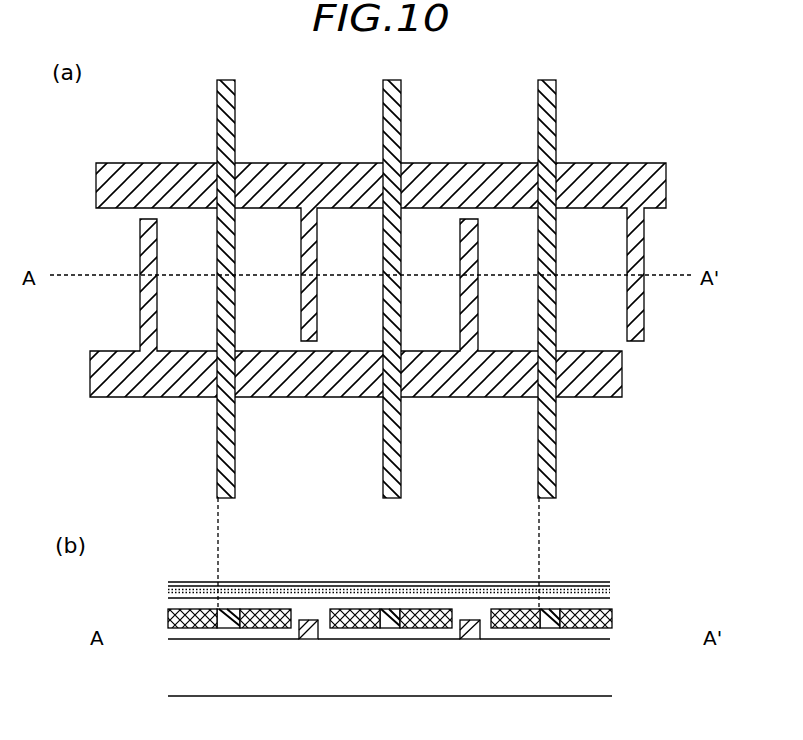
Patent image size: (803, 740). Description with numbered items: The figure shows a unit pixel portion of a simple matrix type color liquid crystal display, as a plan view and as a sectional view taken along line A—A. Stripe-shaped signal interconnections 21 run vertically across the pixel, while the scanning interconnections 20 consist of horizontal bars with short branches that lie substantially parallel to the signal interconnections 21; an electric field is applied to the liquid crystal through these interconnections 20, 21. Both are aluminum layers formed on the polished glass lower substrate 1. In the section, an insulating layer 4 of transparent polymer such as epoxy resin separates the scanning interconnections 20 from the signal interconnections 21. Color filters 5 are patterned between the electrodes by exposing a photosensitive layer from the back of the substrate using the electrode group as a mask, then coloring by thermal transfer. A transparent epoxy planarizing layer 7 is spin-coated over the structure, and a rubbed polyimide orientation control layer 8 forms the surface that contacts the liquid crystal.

The lower substrate 1 is at (578, 678).
The insulating layer 4 is at (592, 637).
The color filters 5 is at (498, 629).
The planarizing layer 7 is at (583, 602).
The orientation control layer 8 is at (583, 587).
The scanning interconnection 20 is at (593, 375).
The signal interconnection 21 is at (383, 112).